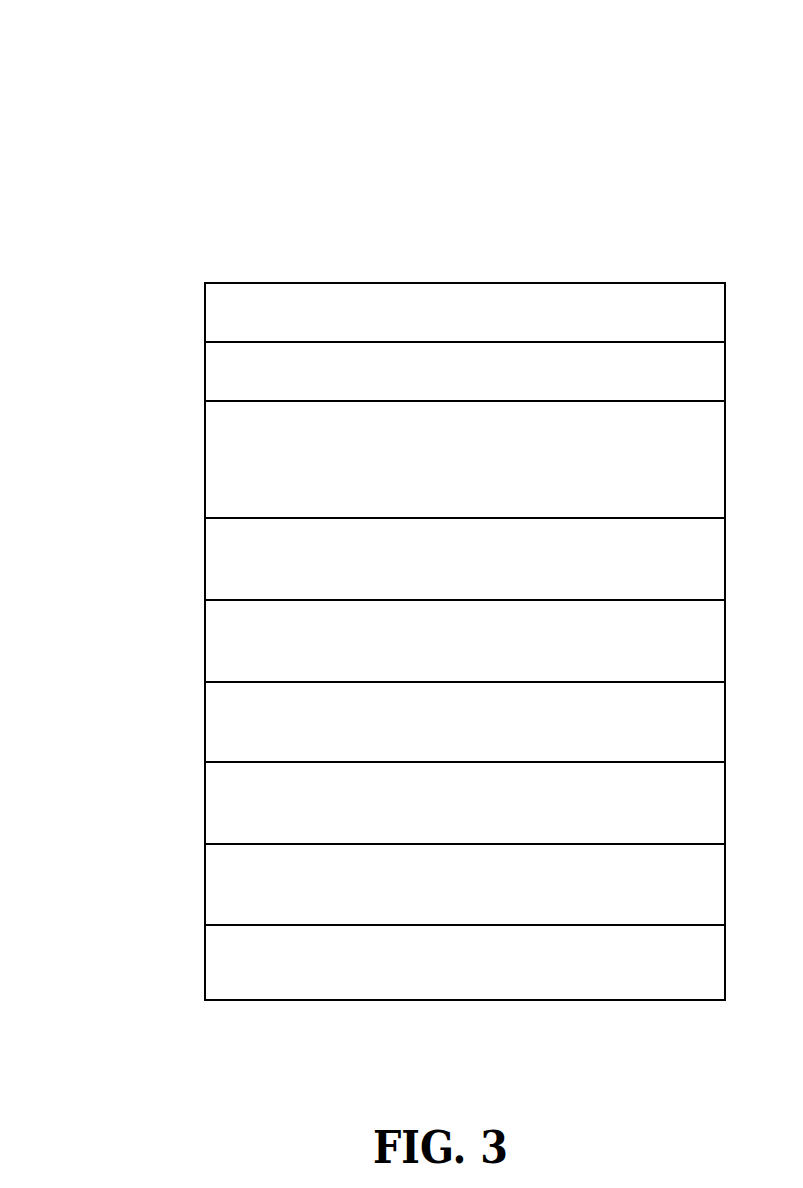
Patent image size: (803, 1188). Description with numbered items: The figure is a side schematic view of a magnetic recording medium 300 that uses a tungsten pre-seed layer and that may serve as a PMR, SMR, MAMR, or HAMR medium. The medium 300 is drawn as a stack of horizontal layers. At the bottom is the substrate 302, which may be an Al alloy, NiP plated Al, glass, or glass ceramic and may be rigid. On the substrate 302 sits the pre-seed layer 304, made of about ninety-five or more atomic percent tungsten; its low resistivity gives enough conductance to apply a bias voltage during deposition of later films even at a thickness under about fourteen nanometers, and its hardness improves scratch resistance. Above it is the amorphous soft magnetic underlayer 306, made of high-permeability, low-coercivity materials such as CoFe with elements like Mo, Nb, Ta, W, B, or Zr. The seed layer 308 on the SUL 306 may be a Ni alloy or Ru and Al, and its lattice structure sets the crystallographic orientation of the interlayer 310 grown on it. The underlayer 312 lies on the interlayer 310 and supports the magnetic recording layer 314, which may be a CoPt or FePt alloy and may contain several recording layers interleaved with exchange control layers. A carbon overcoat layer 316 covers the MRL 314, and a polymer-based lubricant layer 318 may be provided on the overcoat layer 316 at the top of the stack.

The magnetic recording medium 300 is at (126, 94).
The substrate 302 is at (205, 950).
The pre-seed layer 304 is at (205, 880).
The amorphous soft magnetic underlayer (SUL) 306 is at (205, 799).
The seed layer 308 is at (205, 721).
The interlayer 310 is at (205, 640).
The underlayer 312 is at (205, 558).
The magnetic recording layer (MRL) 314 is at (205, 474).
The overcoat layer 316 is at (205, 375).
The lubricant layer 318 is at (205, 315).